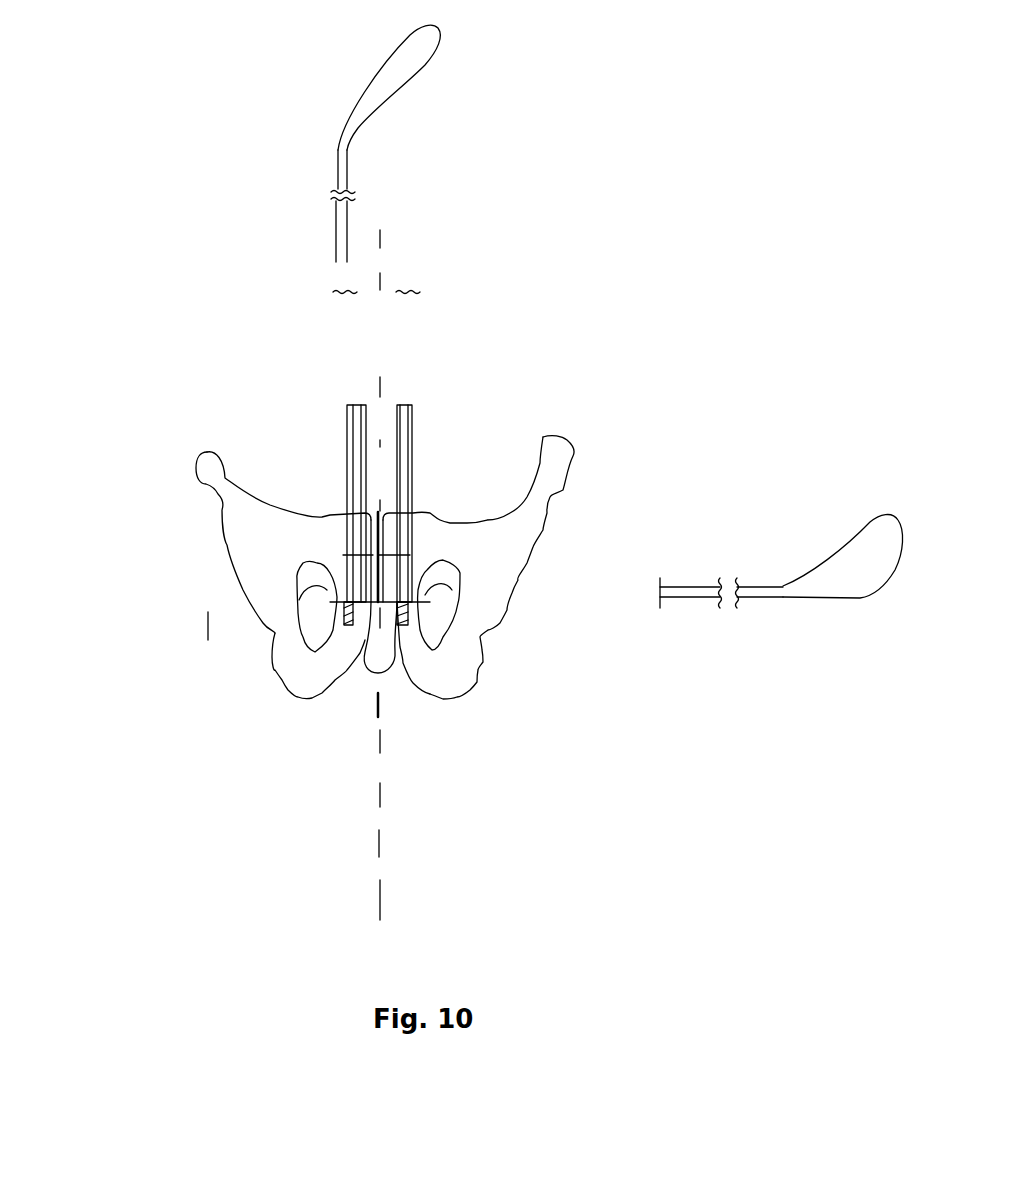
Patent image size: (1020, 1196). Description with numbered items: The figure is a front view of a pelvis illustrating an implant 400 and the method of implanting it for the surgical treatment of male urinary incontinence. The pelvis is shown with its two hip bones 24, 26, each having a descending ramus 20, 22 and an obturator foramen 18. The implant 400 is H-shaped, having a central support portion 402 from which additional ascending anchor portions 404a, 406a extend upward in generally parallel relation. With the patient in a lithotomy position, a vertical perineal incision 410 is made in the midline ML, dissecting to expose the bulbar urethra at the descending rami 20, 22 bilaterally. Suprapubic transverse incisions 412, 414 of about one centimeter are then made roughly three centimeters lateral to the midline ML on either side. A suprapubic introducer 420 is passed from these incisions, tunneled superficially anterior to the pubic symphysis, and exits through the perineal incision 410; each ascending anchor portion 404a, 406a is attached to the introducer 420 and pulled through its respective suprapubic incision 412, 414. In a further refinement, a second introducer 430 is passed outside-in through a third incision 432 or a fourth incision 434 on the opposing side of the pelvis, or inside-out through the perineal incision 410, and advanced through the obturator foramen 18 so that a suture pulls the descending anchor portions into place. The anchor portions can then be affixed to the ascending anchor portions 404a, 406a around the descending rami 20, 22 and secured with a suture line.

The obturator foramen 18 is at (317, 587).
The descending ramus 20 is at (350, 643).
The descending ramus 22 is at (407, 633).
The hip bone 24 is at (234, 480).
The hip bone 26 is at (513, 540).
The implant 400 is at (373, 511).
The support portion 402 is at (481, 557).
The additional anchor portion 404a is at (255, 511).
The additional anchor portion 406a is at (504, 498).
The perineal incision 410 is at (423, 706).
The suprapubic transverse incision 412 is at (308, 267).
The suprapubic transverse incision 414 is at (450, 429).
The introducer 420 is at (334, 143).
The introducer 430 is at (781, 583).
The third incision 432 is at (135, 619).
The fourth incision 434 is at (710, 554).
The midline ML is at (423, 825).